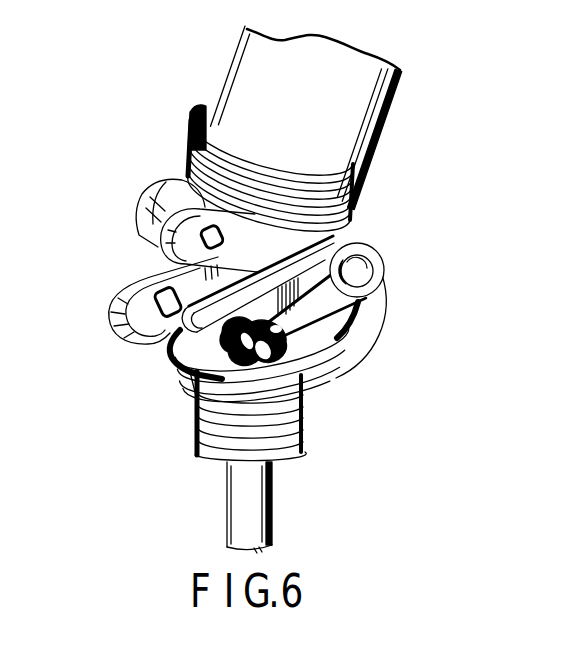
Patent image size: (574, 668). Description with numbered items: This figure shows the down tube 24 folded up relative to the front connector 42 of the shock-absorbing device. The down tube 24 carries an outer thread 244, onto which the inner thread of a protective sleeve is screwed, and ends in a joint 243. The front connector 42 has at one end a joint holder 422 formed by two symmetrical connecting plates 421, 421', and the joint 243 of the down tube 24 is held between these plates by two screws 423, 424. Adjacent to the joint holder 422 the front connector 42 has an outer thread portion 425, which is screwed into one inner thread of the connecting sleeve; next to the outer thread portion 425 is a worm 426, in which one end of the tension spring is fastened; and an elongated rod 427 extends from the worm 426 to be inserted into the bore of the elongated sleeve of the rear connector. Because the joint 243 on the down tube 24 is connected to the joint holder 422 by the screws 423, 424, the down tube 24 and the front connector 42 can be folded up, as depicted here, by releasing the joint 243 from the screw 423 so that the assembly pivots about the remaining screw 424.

The down tube 24 is at (331, 113).
The outer thread 244 is at (215, 166).
The joint 243 is at (137, 201).
The front connector 42 is at (326, 338).
The connecting plate 421 is at (171, 248).
The connecting plate 421' is at (303, 315).
The joint holder 422 is at (152, 334).
The screw 423 is at (301, 372).
The screw 424 is at (403, 247).
The outer thread portion 425 is at (151, 422).
The worm 426 is at (219, 446).
The elongated rod 427 is at (299, 507).